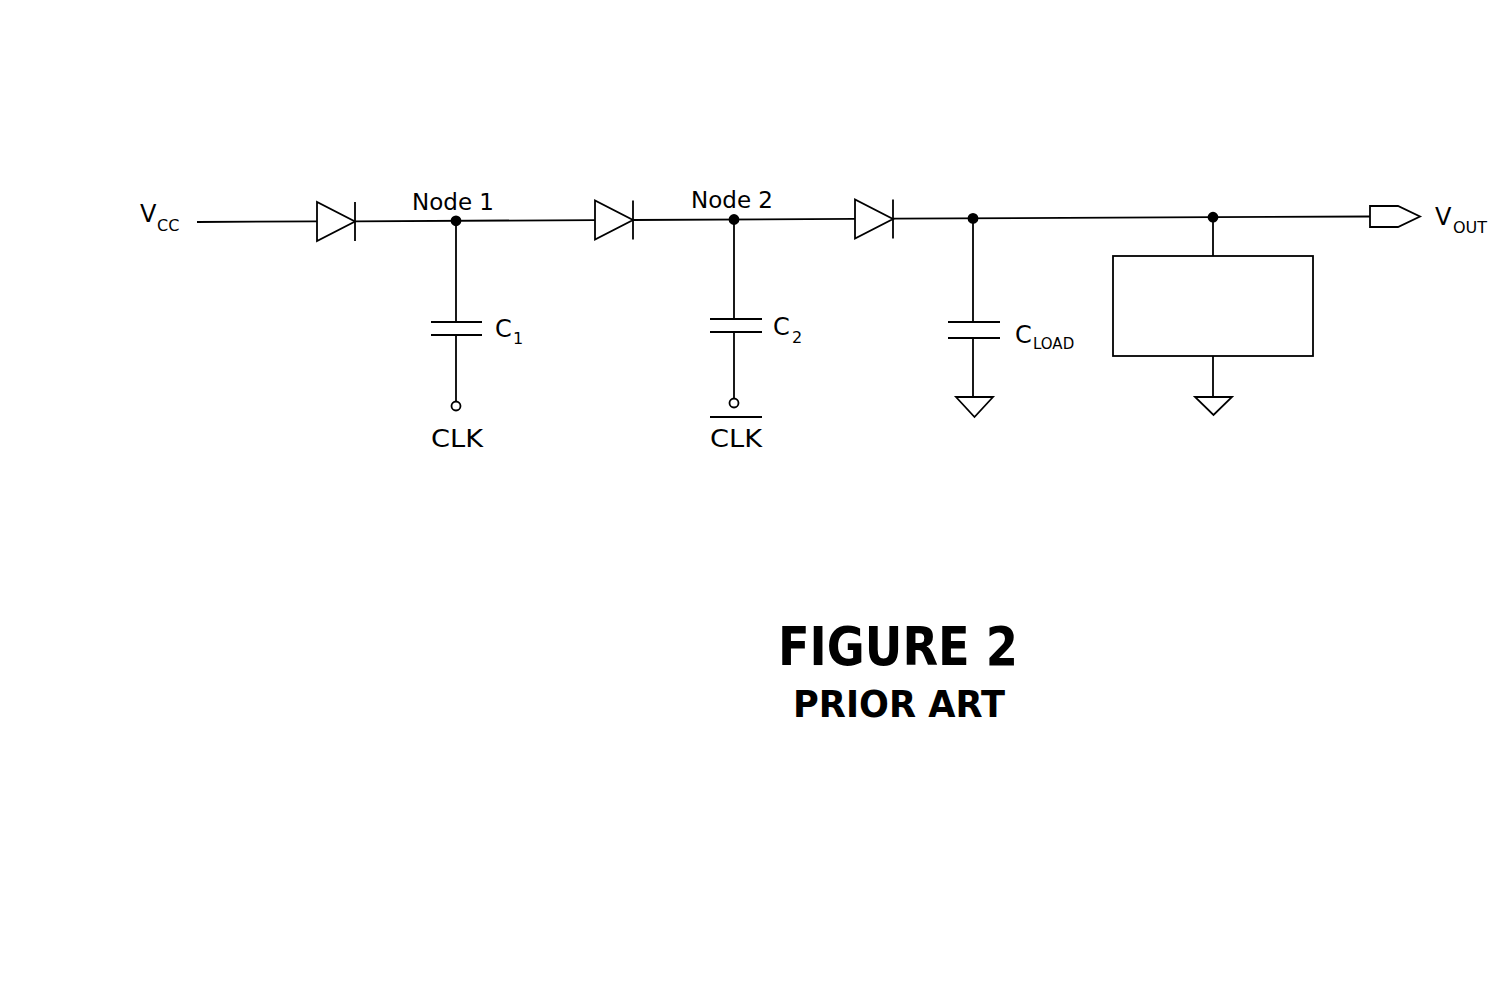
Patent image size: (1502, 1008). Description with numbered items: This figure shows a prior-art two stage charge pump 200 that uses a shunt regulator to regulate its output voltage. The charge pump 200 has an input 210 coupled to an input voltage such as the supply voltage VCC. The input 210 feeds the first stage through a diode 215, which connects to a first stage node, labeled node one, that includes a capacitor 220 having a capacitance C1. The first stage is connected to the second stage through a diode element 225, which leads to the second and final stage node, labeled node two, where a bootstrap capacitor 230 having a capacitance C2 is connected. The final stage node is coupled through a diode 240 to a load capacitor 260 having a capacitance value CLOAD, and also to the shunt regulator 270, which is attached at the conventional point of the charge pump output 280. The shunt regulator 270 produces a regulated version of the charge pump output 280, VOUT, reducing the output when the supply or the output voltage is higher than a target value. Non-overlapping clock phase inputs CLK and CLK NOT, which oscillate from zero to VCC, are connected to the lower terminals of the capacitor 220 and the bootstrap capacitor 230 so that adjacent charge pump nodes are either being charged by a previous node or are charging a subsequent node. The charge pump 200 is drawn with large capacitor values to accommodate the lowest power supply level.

The two stage charge pump 200 is at (1110, 81).
The input 210 is at (228, 221).
The diode 215 is at (343, 260).
The capacitor 220 is at (492, 367).
The diode element 225 is at (622, 260).
The bootstrap capacitor 230 is at (771, 365).
The diode 240 is at (869, 176).
The load capacitor 260 is at (1010, 365).
The shunt regulator 270 is at (1313, 290).
The charge pump output 280 is at (1330, 216).